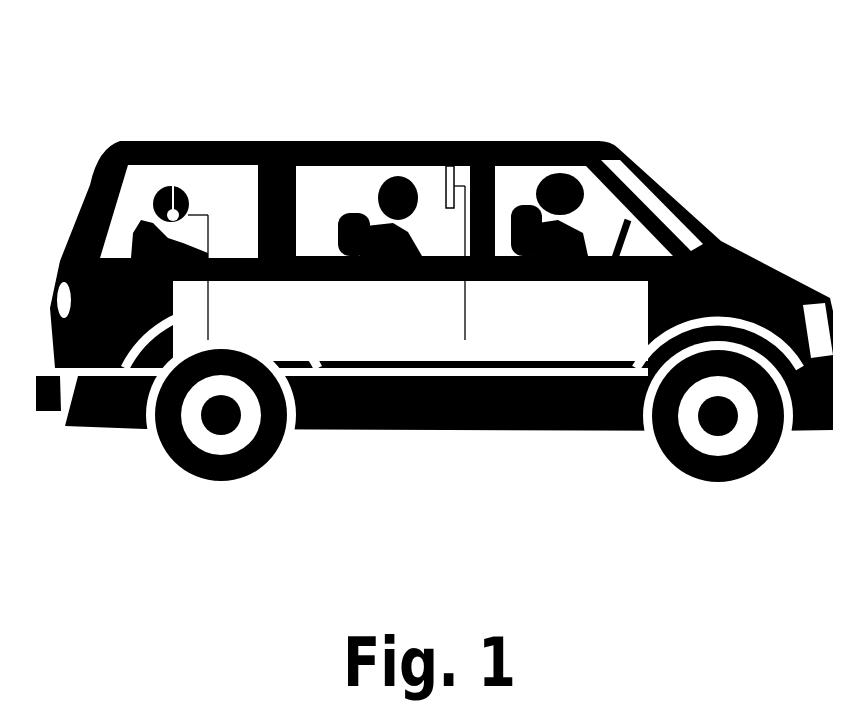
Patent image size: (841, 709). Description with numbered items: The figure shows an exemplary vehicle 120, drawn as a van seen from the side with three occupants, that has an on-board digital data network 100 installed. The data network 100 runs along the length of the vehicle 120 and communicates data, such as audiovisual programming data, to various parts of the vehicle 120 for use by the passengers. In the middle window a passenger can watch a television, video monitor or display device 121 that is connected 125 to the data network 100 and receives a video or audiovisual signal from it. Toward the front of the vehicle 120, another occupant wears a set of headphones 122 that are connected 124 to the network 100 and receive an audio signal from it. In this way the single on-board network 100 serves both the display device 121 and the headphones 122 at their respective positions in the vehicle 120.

The on-board digital data network 100 is at (640, 332).
The vehicle 120 is at (297, 132).
The display device 121 is at (447, 162).
The headphones 122 is at (147, 188).
The connection of headphones to network 124 is at (235, 277).
The connection of display device to network 125 is at (492, 263).